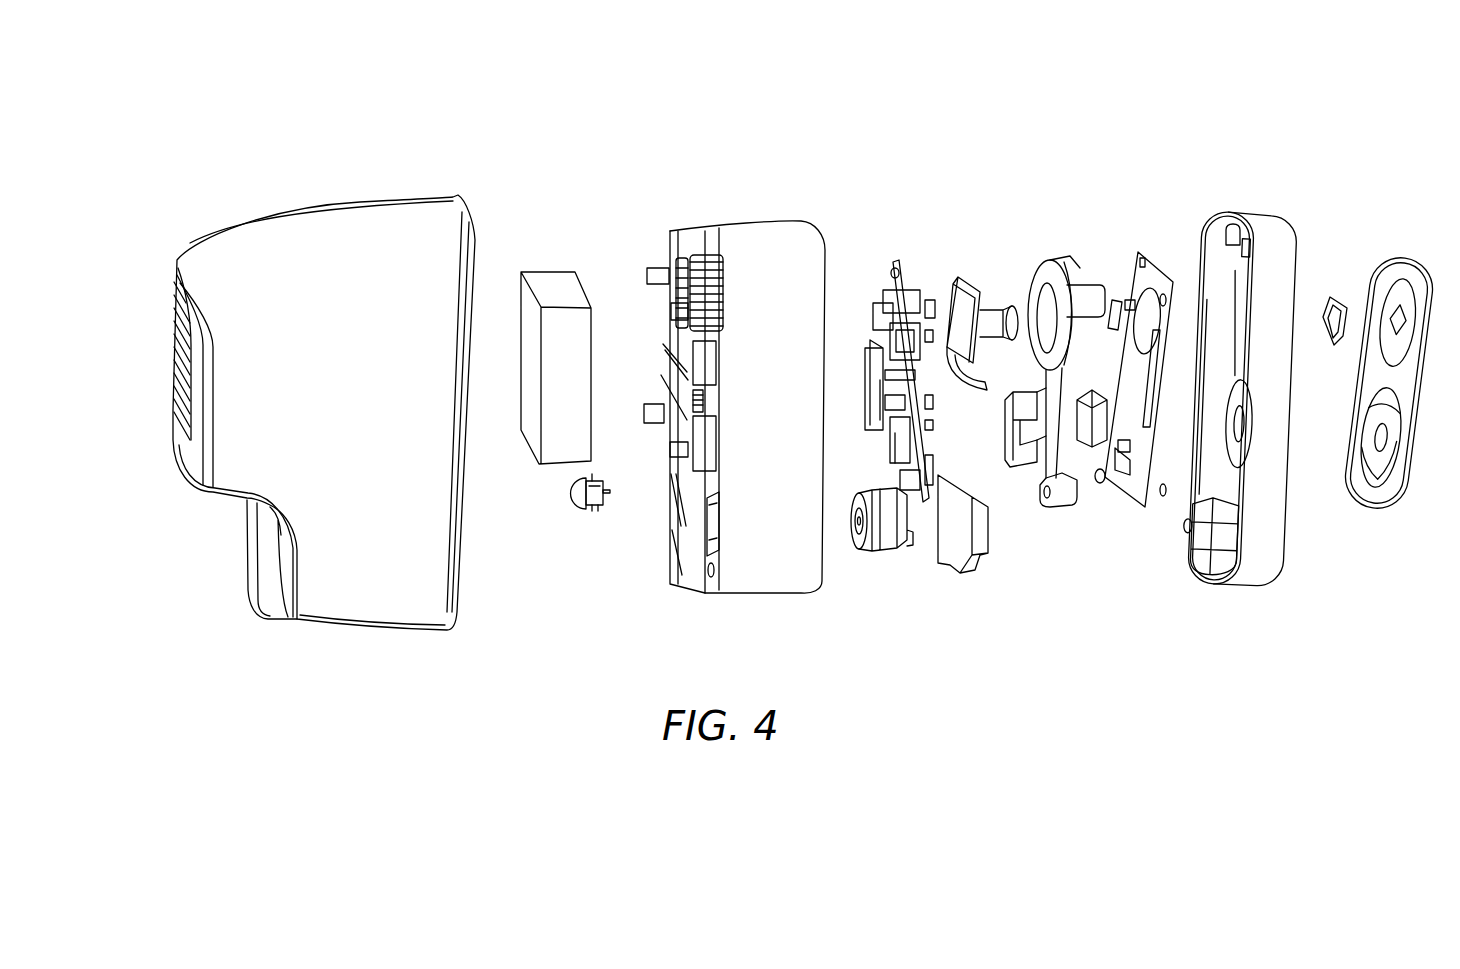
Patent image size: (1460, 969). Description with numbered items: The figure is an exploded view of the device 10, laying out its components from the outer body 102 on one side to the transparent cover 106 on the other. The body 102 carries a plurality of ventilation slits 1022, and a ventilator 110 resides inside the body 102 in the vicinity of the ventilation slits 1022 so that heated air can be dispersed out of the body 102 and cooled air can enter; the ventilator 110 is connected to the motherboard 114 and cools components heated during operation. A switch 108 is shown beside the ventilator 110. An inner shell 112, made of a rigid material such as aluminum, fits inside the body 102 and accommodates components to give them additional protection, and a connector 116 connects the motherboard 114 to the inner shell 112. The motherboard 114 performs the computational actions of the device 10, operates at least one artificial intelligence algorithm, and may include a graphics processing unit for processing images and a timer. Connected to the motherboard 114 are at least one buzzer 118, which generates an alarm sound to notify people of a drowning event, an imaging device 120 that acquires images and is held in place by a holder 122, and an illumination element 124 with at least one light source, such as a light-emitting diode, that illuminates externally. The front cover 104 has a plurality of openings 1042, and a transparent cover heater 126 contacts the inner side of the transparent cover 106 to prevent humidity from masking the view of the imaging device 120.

The device 10 is at (1404, 67).
The body 102 is at (277, 389).
The ventilation slits 1022 is at (173, 375).
The front cover 104 is at (1221, 409).
The openings 1042 is at (1238, 275).
The transparent cover 106 is at (1364, 513).
The switch 108 is at (584, 514).
The ventilator 110 is at (558, 269).
The inner shell 112 is at (768, 226).
The motherboard 114 is at (895, 260).
The connector 116 is at (867, 553).
The buzzer 118 is at (957, 577).
The imaging device 120 is at (980, 292).
The holder 122 is at (1053, 507).
The illumination element 124 is at (1135, 507).
The transparent cover heater 126 is at (1333, 293).